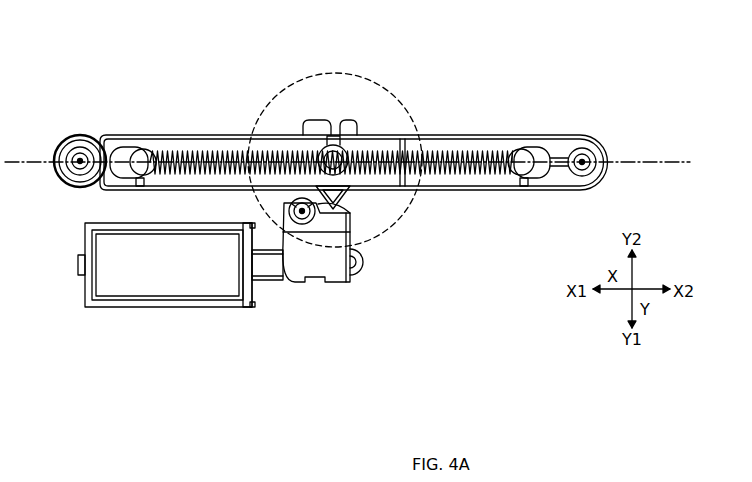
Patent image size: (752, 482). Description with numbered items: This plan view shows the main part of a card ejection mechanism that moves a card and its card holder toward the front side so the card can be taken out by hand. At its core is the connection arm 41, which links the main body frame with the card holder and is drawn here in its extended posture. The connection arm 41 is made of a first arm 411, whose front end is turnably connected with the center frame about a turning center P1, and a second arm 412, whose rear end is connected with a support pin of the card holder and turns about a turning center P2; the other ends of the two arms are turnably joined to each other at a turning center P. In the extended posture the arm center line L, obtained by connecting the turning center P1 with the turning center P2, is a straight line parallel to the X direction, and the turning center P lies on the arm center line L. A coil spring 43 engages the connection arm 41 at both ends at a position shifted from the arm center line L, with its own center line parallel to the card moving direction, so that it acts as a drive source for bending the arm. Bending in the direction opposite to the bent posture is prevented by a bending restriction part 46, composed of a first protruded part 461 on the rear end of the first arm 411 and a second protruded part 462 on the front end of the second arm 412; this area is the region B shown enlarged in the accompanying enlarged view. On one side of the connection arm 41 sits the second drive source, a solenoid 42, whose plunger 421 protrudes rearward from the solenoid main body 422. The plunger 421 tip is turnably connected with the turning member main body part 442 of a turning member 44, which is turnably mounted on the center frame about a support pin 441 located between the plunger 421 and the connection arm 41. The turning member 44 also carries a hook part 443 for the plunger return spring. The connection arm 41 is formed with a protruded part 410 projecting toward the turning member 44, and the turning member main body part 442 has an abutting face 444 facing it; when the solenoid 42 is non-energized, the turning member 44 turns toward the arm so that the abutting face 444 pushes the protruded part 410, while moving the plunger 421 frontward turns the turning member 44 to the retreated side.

The connection arm 41 is at (203, 128).
The first arm 411 is at (172, 133).
The second arm 412 is at (498, 135).
The coil spring 43 is at (453, 140).
The bending restriction part 46 is at (312, 92).
The first protruded part 461 is at (318, 120).
The second protruded part 462 is at (348, 120).
The protruded part 410 is at (345, 196).
The solenoid 42 is at (191, 323).
The plunger 421 is at (270, 268).
The solenoid main body 422 is at (175, 288).
The turning member 44 is at (334, 278).
The support pin 441 is at (289, 209).
The turning member main body part 442 is at (302, 282).
The hook part 443 is at (372, 258).
The abutting face 444 is at (386, 226).
The turning center P1 is at (80, 158).
The turning center P2 is at (583, 160).
The turning center P is at (335, 157).
The region B is at (353, 72).
The arm center line L is at (651, 160).